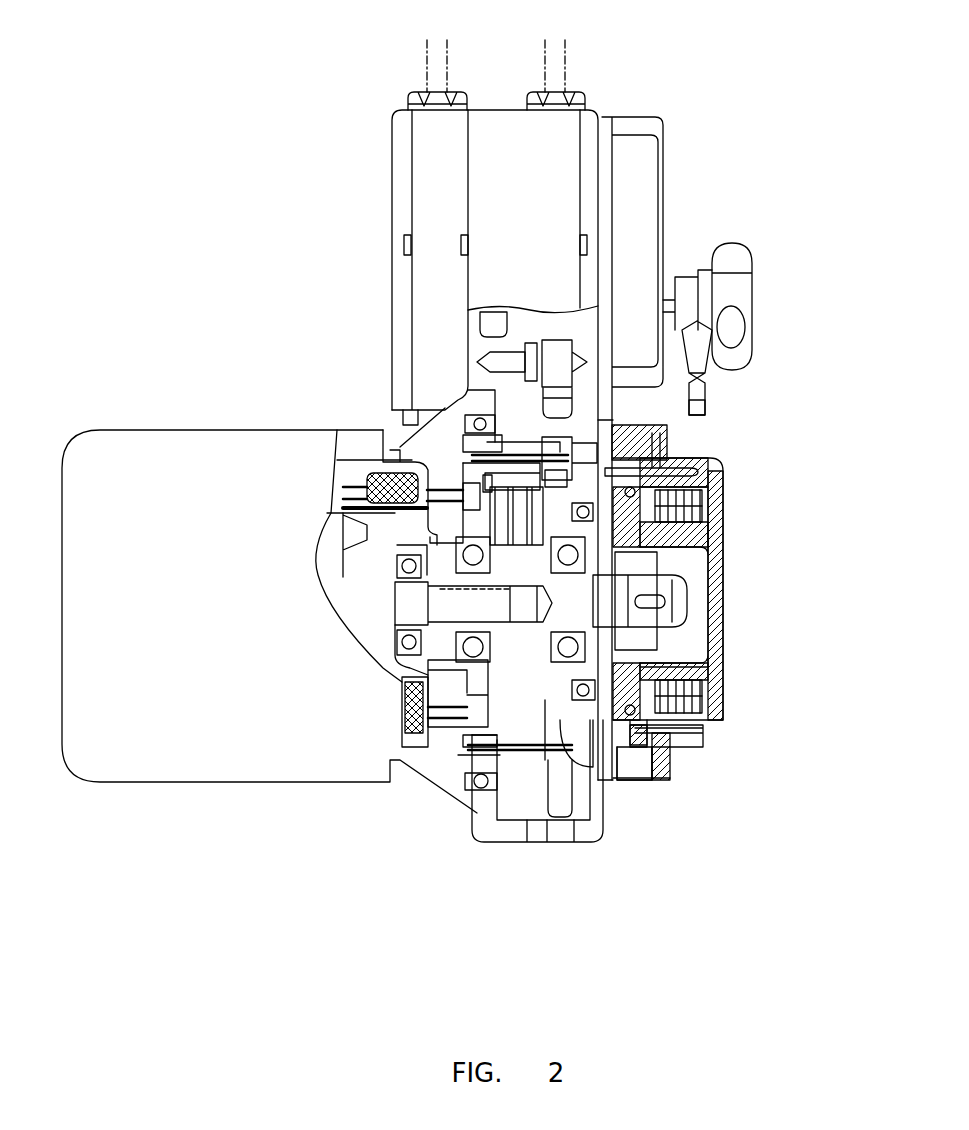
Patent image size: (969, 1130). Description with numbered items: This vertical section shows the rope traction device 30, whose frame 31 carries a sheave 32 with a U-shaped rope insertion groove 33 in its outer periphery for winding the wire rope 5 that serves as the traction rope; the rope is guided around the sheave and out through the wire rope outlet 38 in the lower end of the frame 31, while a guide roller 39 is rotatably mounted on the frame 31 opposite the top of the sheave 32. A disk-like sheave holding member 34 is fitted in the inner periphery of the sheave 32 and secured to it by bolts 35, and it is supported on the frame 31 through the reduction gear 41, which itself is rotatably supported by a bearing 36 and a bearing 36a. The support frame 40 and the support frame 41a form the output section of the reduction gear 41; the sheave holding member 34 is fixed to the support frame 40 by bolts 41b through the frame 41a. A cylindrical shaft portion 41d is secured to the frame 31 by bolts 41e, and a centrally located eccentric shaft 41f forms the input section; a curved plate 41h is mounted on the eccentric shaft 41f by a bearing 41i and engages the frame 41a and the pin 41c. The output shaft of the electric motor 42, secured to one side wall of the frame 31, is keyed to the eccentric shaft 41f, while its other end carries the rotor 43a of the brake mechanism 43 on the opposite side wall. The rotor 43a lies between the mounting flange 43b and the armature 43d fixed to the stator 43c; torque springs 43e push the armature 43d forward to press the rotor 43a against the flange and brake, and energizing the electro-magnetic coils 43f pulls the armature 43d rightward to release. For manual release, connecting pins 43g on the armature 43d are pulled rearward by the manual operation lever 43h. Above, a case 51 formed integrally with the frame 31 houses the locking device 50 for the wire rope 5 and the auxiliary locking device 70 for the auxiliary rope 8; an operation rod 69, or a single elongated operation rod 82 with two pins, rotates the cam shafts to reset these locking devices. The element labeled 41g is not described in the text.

The wire rope 5 is at (565, 70).
The auxiliary rope 8 is at (427, 70).
The rope traction device 30 is at (757, 312).
The frame 31 is at (452, 430).
The sheave 32 is at (557, 427).
The rope insertion groove 33 is at (560, 398).
The sheave holding member 34 is at (617, 475).
The bolts 35 is at (425, 650).
The bearing 36 is at (633, 528).
The bearing 36a is at (480, 787).
The wire rope outlet 38 is at (562, 835).
The guide roller 39 is at (558, 340).
The support frame 40 is at (477, 740).
The reduction gear 41 is at (468, 757).
The support frame 41a is at (515, 782).
The bolts 41b is at (533, 925).
The pin 41c is at (458, 762).
The cylindrical shaft portion 41d is at (452, 687).
The bolts 41e is at (440, 717).
The eccentric shaft 41f is at (400, 675).
The output shaft end 41g is at (690, 613).
The curved plate 41h is at (517, 522).
The bearing 41i is at (500, 587).
The electric motor 42 is at (167, 452).
The brake mechanism 43 is at (712, 737).
The rotor 43a is at (632, 677).
The mounting flange 43b is at (623, 770).
The stator 43c is at (700, 510).
The armature 43d is at (660, 542).
The torque springs 43e is at (720, 717).
The electro-magnetic coils 43f is at (710, 695).
The connecting pins 43g is at (663, 753).
The manual operation lever 43h is at (703, 413).
The locking device 50 is at (666, 108).
The case 51 is at (503, 128).
The operation rod 69 is at (730, 292).
The auxiliary locking device 70 is at (372, 150).
The operation rod 82 is at (728, 262).